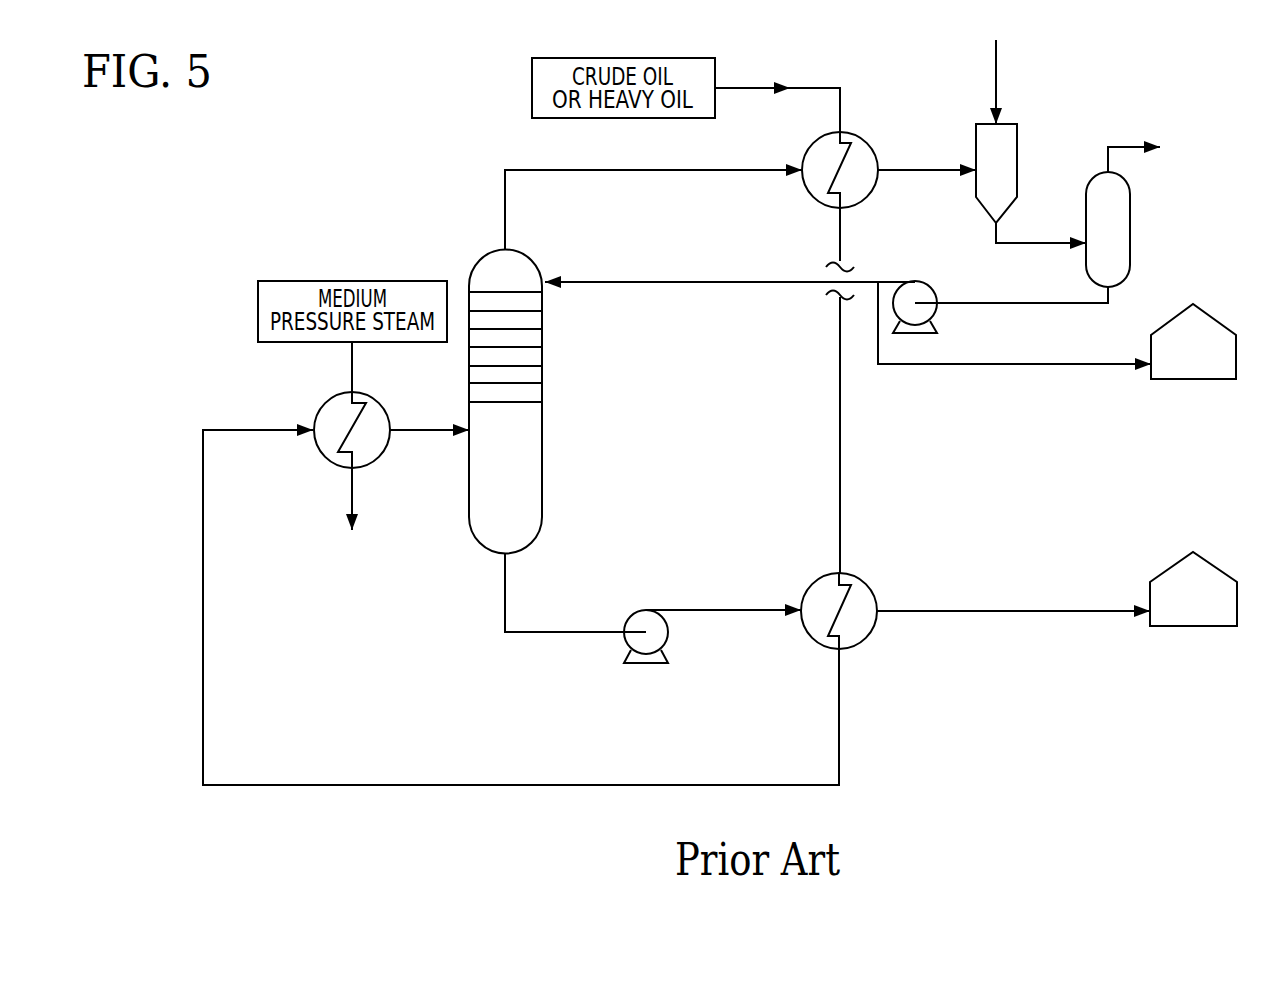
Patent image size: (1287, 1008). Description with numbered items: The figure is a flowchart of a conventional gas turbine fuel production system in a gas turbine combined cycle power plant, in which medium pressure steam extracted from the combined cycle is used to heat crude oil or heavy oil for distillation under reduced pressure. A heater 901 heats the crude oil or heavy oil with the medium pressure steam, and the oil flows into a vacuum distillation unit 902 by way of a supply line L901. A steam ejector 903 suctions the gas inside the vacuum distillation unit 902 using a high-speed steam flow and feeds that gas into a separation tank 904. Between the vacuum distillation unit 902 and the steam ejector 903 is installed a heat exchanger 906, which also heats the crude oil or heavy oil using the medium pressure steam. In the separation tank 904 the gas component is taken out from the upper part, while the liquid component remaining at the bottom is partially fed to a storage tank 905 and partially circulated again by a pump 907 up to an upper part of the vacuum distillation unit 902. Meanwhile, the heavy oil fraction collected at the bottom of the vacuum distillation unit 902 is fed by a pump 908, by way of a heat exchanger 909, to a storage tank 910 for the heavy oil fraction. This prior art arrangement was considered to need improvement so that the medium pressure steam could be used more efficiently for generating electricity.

The heater 901 is at (374, 452).
The vacuum distillation unit 902 is at (530, 470).
The steam ejector 903 is at (1008, 168).
The separation tank 904 is at (1130, 240).
The storage tank 905 is at (1178, 365).
The heat exchanger 906 is at (866, 152).
The pump 907 is at (917, 336).
The pump 908 is at (645, 665).
The heat exchanger 909 is at (866, 628).
The storage tank 910 is at (1180, 618).
The supply line L901 is at (840, 408).